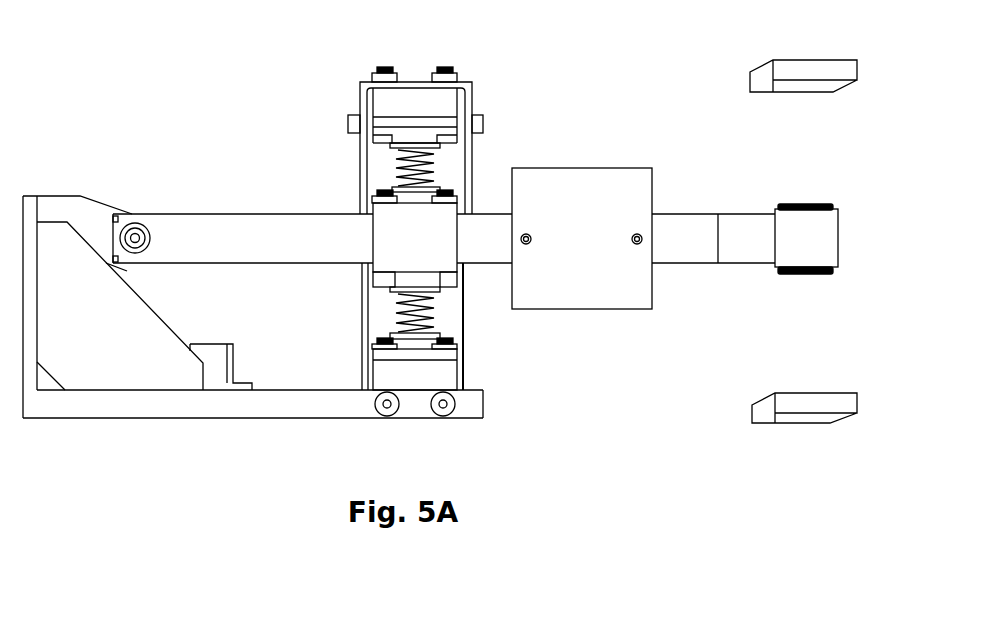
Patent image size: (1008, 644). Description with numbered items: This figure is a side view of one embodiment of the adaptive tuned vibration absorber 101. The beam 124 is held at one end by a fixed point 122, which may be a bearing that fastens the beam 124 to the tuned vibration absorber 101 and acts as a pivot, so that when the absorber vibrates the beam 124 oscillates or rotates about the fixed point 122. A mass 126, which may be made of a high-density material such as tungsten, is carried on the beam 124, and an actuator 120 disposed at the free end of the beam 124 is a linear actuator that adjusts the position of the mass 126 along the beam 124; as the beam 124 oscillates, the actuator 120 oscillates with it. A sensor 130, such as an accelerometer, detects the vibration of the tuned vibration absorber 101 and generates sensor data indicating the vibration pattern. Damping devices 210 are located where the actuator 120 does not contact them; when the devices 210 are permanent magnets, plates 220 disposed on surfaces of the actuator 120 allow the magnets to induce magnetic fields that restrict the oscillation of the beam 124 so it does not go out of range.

The tuned vibration absorber 101 is at (644, 490).
The actuator 120 is at (783, 228).
The fixed point 122 is at (138, 222).
The beam 124 is at (697, 240).
The mass 126 is at (565, 263).
The sensor 130 is at (217, 368).
The damping device 210 is at (752, 70).
The plate 220 is at (833, 305).